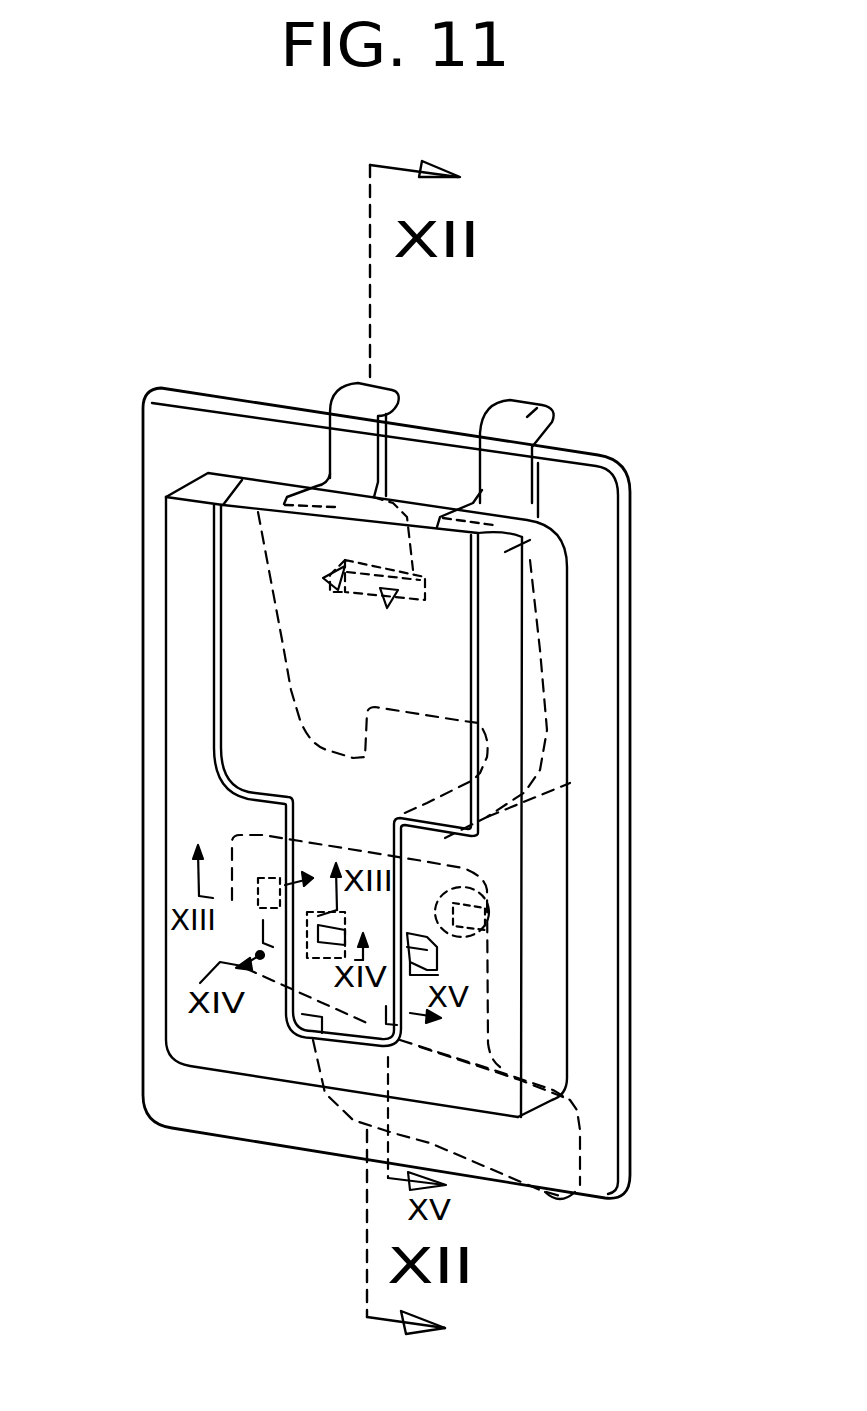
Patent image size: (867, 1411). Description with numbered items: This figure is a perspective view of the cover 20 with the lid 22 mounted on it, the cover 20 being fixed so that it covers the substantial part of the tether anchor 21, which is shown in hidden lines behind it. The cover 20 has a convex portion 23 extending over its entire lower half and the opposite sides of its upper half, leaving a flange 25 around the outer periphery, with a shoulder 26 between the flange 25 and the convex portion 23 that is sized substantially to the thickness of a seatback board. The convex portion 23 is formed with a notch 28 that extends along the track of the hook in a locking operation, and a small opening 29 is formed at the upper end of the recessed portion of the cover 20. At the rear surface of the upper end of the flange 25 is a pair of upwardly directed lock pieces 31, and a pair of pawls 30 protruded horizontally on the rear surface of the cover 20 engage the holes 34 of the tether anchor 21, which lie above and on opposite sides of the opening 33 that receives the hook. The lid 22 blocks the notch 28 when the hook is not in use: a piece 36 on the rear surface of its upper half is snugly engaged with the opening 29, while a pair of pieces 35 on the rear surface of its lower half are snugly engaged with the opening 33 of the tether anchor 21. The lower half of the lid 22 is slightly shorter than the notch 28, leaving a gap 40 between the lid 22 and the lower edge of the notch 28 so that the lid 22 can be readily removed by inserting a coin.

The cover 20 is at (243, 446).
The tether anchor 21 is at (330, 847).
The lid 22 is at (265, 628).
The convex portion 23 is at (185, 803).
The flange 25 is at (592, 673).
The shoulder 26 is at (560, 787).
The notch 28 is at (222, 722).
The small opening 29 is at (393, 503).
The pawls 30 is at (462, 913).
The lock pieces 31 is at (352, 395).
The opening 33 is at (433, 953).
The holes 34 is at (470, 893).
The pieces 35 is at (430, 945).
The piece 36 is at (430, 584).
The gap 40 is at (308, 1034).